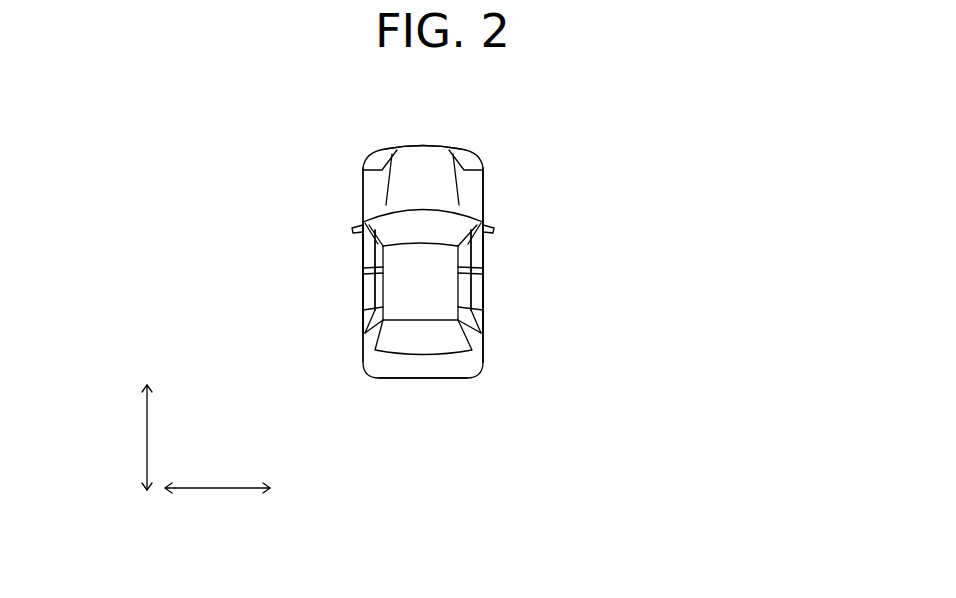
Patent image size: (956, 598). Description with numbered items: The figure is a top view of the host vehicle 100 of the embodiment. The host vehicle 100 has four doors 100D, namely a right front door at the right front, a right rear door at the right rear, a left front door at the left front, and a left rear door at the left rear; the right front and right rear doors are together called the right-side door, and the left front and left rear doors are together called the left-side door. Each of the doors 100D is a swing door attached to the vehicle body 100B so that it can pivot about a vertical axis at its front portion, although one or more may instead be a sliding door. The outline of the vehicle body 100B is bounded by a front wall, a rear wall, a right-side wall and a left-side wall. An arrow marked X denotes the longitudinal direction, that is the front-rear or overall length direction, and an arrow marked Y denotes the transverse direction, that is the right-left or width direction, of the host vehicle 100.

The host vehicle 100 is at (422, 146).
The vehicle body 100B is at (484, 198).
The doors 100D is at (160, 285).
The longitudinal direction X is at (146, 437).
The transverse direction Y is at (217, 492).